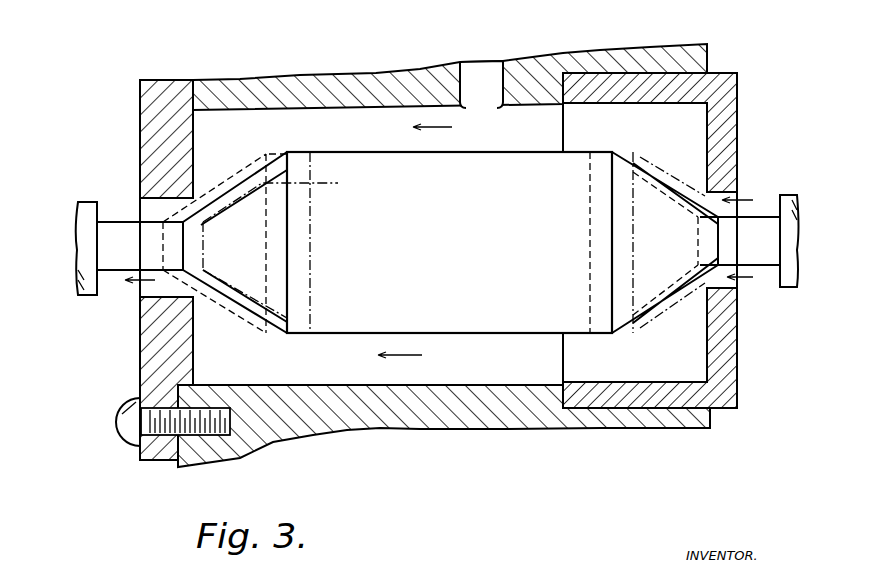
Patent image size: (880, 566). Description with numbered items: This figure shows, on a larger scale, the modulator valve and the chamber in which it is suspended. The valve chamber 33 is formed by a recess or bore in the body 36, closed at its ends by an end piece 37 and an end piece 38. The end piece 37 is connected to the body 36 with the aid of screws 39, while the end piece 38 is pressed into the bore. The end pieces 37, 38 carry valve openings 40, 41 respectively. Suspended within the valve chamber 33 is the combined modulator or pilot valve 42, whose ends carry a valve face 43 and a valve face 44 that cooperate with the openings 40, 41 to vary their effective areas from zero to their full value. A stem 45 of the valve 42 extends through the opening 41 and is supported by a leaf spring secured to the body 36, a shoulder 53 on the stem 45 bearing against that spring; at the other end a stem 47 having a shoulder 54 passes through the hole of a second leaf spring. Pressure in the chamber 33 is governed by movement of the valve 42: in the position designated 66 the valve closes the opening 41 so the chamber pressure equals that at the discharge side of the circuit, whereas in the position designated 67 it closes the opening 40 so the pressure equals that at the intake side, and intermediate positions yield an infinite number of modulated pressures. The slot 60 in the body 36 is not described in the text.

The valve chamber 33 is at (368, 115).
The body 36 is at (590, 56).
The end piece 37 is at (150, 357).
The end piece 38 is at (737, 105).
The screws 39 is at (126, 434).
The valve opening 40 is at (142, 287).
The valve opening 41 is at (733, 283).
The modulator valve 42 is at (466, 320).
The valve face 43 is at (252, 308).
The valve face 44 is at (640, 292).
The stem 45 is at (755, 222).
The stem 47 is at (155, 210).
The shoulder 53 is at (787, 205).
The shoulder 54 is at (86, 200).
The slot 60 is at (490, 70).
The valve position 66 is at (696, 146).
The valve position 67 is at (233, 178).